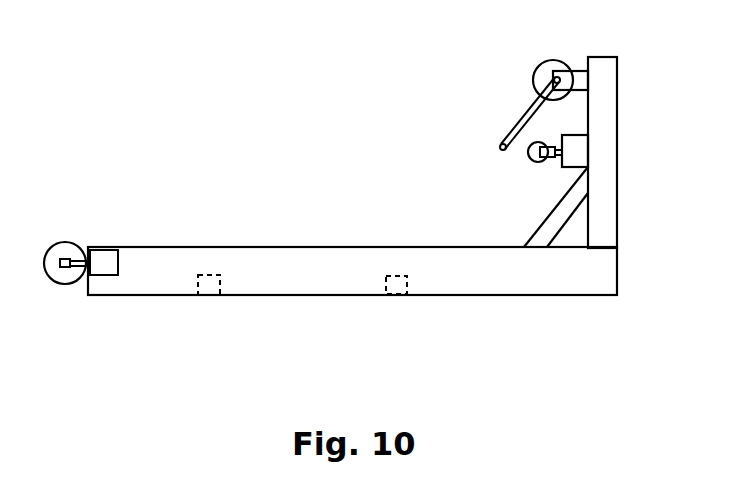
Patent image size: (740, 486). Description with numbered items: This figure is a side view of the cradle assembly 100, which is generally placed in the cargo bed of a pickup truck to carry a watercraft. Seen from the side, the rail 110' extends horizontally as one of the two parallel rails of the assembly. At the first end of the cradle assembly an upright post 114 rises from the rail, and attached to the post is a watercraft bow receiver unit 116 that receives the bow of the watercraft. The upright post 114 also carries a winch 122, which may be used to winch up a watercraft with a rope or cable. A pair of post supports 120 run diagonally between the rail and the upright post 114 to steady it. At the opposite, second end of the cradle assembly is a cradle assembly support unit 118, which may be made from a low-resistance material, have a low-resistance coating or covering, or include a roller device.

The cradle assembly 100 is at (279, 107).
The rail 110' is at (352, 303).
The upright post 114 is at (603, 117).
The watercraft bow receiver unit 116 is at (535, 162).
The cradle assembly support unit 118 is at (57, 242).
The post supports 120 is at (573, 195).
The winch 122 is at (550, 60).